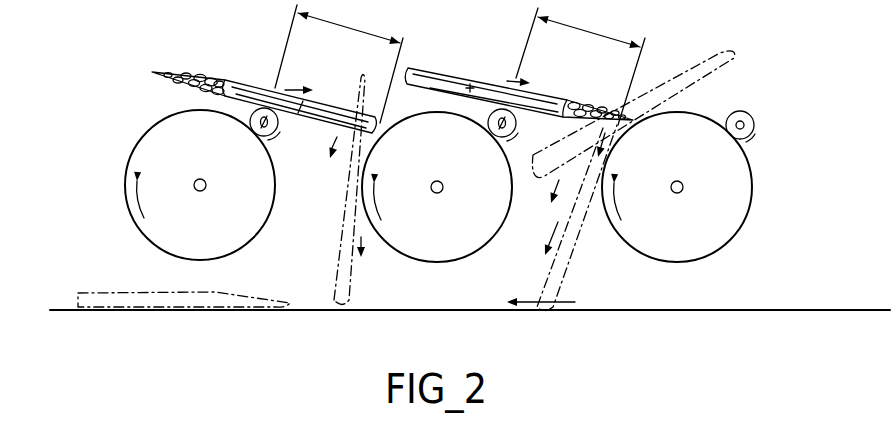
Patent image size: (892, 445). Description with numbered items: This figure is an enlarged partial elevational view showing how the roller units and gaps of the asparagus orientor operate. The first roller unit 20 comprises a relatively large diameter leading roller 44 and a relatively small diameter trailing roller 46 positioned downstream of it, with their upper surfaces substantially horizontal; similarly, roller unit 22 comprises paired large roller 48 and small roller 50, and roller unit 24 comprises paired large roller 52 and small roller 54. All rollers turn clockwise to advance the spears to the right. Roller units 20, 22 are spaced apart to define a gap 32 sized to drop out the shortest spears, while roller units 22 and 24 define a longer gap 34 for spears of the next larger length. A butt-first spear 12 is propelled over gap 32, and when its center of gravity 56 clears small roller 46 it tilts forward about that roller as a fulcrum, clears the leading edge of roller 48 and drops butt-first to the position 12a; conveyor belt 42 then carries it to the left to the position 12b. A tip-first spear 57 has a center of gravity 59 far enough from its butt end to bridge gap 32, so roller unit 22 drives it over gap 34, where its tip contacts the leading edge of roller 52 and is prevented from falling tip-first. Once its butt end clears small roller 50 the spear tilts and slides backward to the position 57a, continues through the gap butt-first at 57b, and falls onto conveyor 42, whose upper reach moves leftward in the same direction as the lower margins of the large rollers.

The spear 12 is at (234, 81).
The dropped spear position 12a is at (330, 275).
The conveyed spear position 12b is at (113, 291).
The first roller unit 20 is at (143, 133).
The roller unit 22 is at (381, 92).
The roller unit 24 is at (714, 106).
The gap 32 is at (352, 24).
The gap 34 is at (592, 28).
The conveyor belt 42 is at (394, 309).
The leading roller 44 is at (230, 256).
The trailing roller 46 is at (279, 137).
The large roller 48 is at (470, 257).
The small roller 50 is at (519, 132).
The large roller 52 is at (717, 257).
The small roller 54 is at (755, 135).
The center of gravity 56 is at (303, 101).
The tip-first spear 57 is at (432, 75).
The backward-tilted spear position 57a is at (677, 77).
The sliding spear position 57b is at (565, 271).
The center of gravity 59 is at (468, 89).